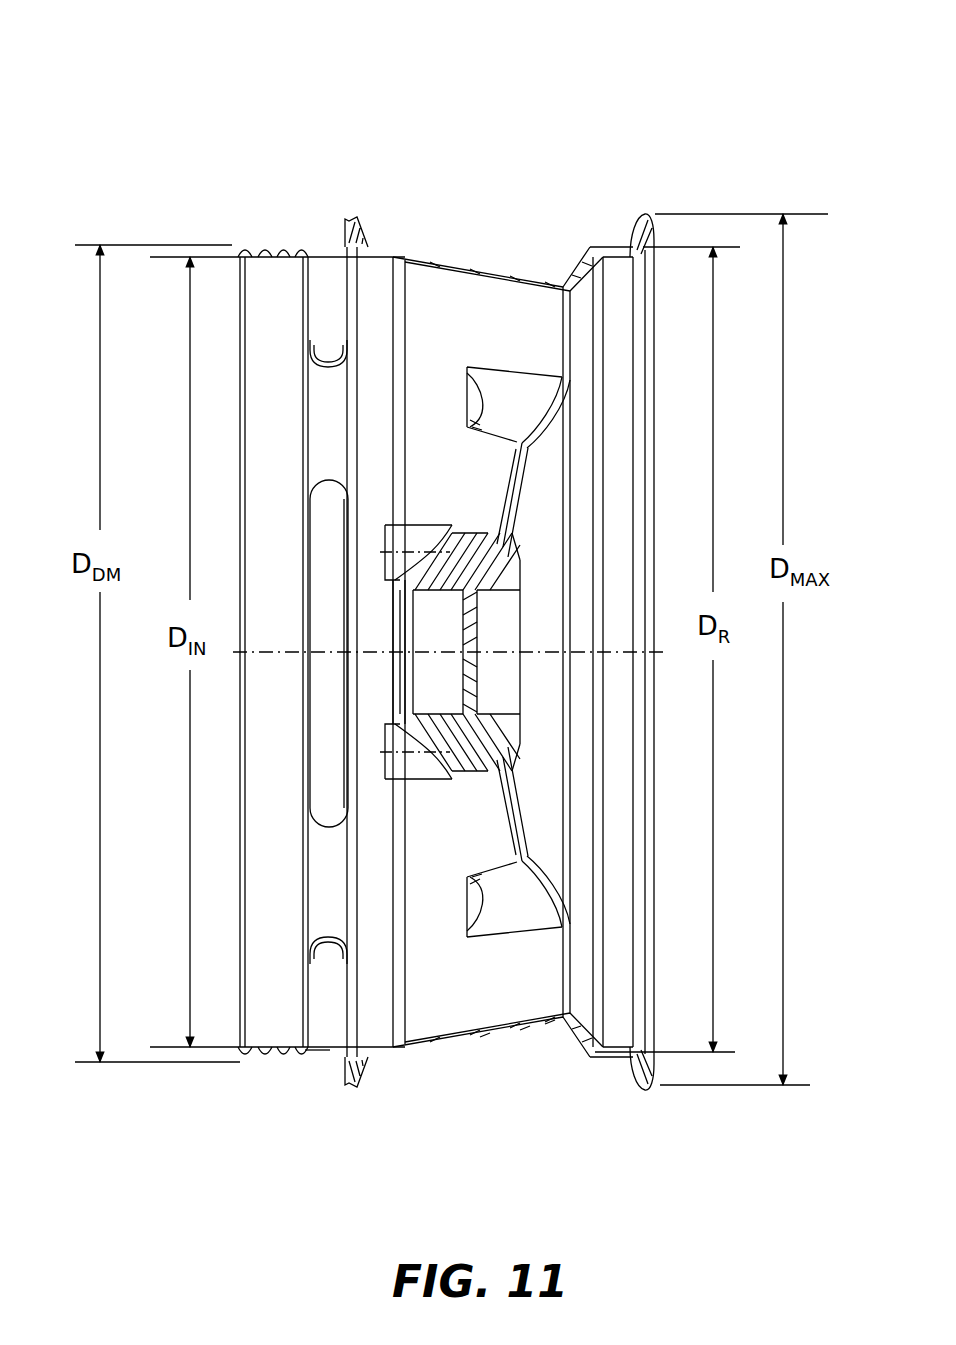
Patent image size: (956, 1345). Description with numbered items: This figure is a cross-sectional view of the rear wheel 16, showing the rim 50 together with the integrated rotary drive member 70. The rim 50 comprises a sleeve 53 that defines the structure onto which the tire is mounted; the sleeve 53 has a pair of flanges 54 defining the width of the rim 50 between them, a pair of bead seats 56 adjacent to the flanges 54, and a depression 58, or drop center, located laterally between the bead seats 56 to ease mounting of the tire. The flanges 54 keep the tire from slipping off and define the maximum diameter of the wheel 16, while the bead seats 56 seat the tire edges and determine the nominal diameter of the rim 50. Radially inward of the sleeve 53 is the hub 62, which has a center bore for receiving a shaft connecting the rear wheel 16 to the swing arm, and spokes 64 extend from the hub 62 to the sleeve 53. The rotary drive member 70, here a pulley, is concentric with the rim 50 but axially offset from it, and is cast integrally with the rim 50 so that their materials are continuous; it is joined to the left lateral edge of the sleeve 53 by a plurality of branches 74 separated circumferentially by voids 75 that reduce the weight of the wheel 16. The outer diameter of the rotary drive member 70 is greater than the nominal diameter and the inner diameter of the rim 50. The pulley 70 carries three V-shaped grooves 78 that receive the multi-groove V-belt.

The rear wheel 16 is at (291, 179).
The rim 50 is at (620, 395).
The sleeve 53 is at (500, 1032).
The flanges 54 is at (648, 217).
The bead seats 56 is at (608, 247).
The depression 58 is at (548, 1036).
The hub 62 is at (488, 573).
The spokes 64 is at (483, 505).
The rotary drive member 70 is at (287, 1008).
The branches 74 is at (322, 392).
The voids 75 is at (325, 270).
The V-shaped grooves 78 is at (252, 243).